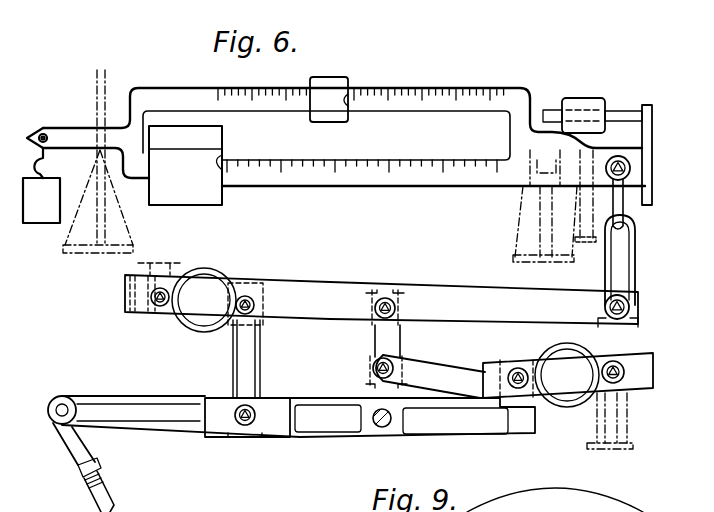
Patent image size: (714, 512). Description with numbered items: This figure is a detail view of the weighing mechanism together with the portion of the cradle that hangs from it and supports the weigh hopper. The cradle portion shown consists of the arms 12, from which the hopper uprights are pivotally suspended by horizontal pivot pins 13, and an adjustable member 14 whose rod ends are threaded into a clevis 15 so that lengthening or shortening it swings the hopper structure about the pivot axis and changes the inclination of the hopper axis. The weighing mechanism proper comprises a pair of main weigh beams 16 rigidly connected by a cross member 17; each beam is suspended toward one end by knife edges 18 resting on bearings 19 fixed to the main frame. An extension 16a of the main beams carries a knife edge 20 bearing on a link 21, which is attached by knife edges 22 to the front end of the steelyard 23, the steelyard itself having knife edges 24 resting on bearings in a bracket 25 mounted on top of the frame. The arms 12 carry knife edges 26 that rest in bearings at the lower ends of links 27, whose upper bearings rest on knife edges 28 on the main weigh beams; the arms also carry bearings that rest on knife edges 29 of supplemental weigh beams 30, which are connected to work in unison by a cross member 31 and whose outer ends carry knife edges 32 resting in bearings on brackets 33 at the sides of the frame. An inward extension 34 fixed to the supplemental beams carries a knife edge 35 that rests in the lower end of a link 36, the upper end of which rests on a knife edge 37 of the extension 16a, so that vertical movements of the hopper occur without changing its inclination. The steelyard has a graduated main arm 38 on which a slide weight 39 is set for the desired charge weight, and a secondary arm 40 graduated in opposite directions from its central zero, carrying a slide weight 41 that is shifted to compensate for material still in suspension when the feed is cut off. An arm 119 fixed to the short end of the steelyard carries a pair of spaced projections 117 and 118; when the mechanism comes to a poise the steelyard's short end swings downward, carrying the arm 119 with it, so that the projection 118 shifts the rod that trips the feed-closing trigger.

The arms 12 is at (120, 406).
The horizontal pivot pins 13 is at (377, 428).
The adjustable member 14 is at (104, 504).
The clevis 15 is at (76, 448).
The main weigh beam 16 is at (283, 303).
The main beam extension 16a is at (332, 302).
The cross member 17 is at (222, 277).
The knife edges 18 is at (151, 295).
The bearings 19 is at (158, 306).
The knife edge 20 is at (632, 303).
The link 21 is at (630, 265).
The knife edges 22 is at (630, 168).
The steelyard 23 is at (516, 101).
The knife edges 24 is at (552, 150).
The bracket 25 is at (524, 214).
The knife edges 26 is at (260, 404).
The links 27 is at (262, 360).
The knife edges 28 is at (247, 316).
The knife edges 29 is at (520, 389).
The supplemental weigh beams 30 is at (557, 386).
The cross member 31 is at (548, 352).
The knife edges 32 is at (617, 362).
The brackets 33 is at (628, 420).
The inward extension 34 is at (417, 364).
The knife edge 35 is at (372, 367).
The link 36 is at (374, 340).
The knife edge 37 is at (396, 308).
The main arm 38 is at (360, 180).
The slide weight 39 is at (185, 165).
The secondary arm 40 is at (381, 103).
The slide weight 41 is at (332, 80).
The projection 117 is at (579, 243).
The projection 118 is at (592, 244).
The arm 119 is at (590, 212).